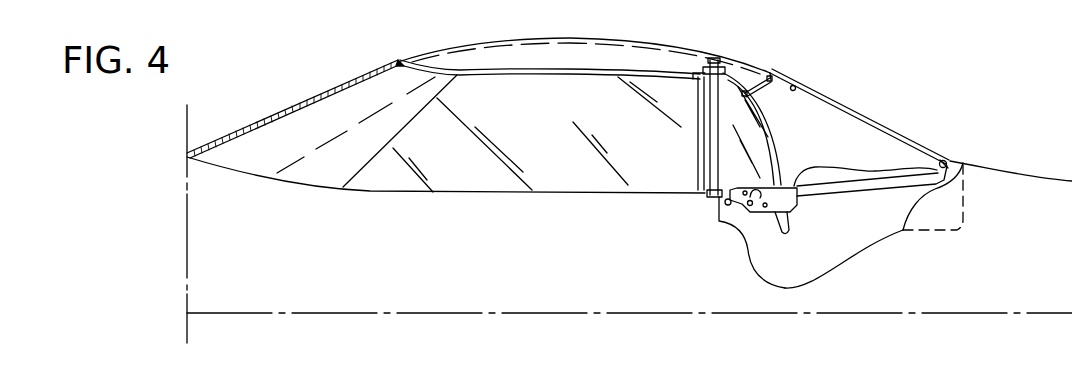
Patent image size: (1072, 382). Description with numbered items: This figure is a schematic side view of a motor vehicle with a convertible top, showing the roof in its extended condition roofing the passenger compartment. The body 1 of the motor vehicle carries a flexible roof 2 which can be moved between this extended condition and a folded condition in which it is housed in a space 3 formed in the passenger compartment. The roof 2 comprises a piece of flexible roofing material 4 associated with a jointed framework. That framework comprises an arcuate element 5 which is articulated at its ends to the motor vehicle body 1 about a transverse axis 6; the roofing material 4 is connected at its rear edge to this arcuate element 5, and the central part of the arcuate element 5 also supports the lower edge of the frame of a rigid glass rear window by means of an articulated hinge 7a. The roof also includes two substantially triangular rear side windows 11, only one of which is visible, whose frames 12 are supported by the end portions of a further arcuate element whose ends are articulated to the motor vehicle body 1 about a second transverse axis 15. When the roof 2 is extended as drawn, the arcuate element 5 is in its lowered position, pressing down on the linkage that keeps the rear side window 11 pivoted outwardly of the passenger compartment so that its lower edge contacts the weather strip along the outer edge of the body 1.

The motor vehicle body 1 is at (557, 218).
The flexible roof 2 is at (766, 68).
The space 3 is at (843, 250).
The flexible roofing material 4 is at (497, 42).
The arcuate element 5 is at (848, 188).
The transverse axis 6 is at (743, 237).
The articulated hinge 7a is at (947, 162).
The rear side window 11 is at (738, 140).
The frame 12 is at (778, 141).
The transverse axis 15 is at (712, 206).